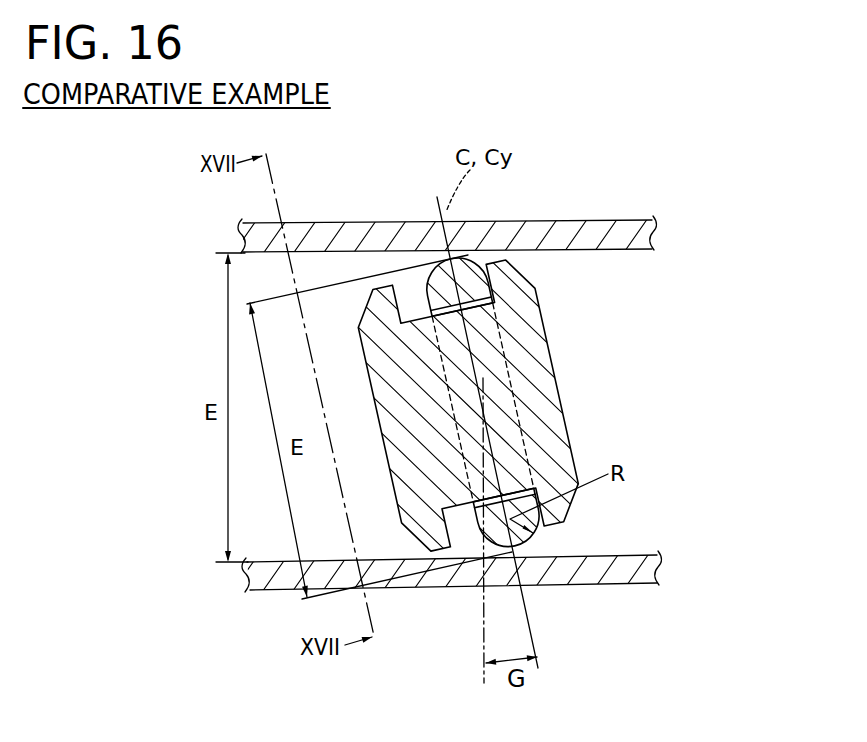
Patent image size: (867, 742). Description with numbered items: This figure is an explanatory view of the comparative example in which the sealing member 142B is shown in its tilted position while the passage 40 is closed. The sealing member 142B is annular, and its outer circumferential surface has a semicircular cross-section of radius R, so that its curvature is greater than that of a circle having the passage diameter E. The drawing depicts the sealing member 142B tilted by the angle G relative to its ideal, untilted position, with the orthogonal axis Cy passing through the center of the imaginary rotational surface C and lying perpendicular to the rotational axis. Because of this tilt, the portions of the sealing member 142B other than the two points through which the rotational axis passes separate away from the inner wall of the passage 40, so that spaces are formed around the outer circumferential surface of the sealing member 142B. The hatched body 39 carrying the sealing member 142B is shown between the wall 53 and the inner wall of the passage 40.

The housing wall 53 is at (583, 230).
The passage 40 is at (598, 566).
The ring member 39 is at (552, 412).
The sealing member 142B is at (468, 270).